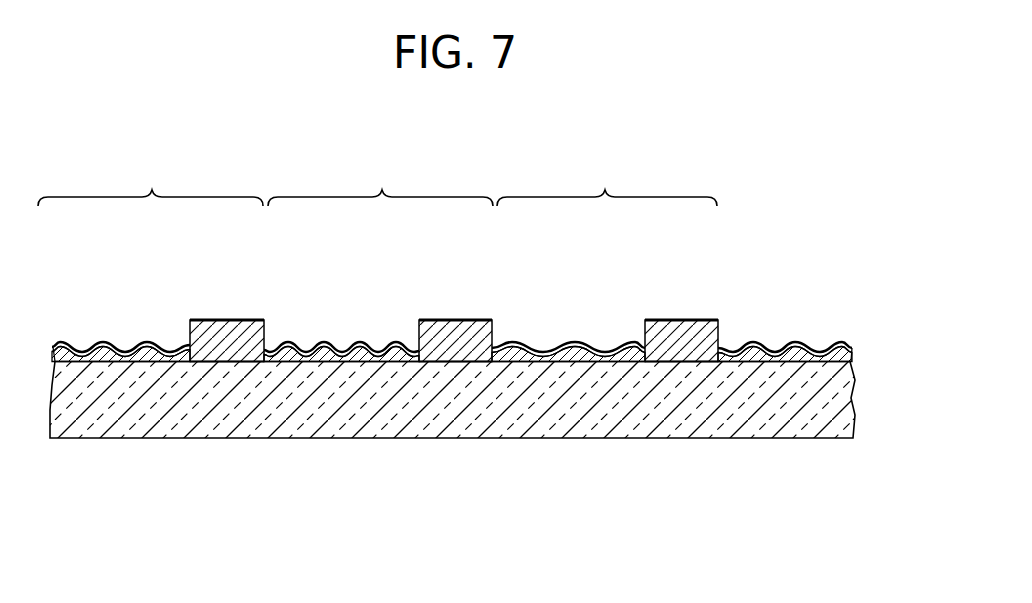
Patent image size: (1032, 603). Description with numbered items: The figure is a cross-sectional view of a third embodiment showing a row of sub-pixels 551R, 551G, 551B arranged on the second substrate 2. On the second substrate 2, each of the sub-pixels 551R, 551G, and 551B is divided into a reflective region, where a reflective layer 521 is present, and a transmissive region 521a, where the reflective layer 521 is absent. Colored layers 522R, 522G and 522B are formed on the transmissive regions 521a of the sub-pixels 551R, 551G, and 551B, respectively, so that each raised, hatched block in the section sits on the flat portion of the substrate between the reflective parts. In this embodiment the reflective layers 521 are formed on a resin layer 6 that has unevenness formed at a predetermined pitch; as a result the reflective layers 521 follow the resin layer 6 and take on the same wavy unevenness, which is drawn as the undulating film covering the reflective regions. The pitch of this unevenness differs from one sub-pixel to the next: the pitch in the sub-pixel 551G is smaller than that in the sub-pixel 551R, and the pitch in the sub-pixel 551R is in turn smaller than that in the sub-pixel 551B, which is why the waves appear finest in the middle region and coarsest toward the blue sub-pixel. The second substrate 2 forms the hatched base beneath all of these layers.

The second substrate 2 is at (840, 412).
The resin layer 6 is at (851, 352).
The reflective layer 521 is at (103, 344).
The transmissive region 521a is at (215, 362).
The colored layer 522R is at (227, 320).
The colored layer 522G is at (457, 320).
The colored layer 522B is at (681, 320).
The sub-pixel 551R is at (150, 181).
The sub-pixel 551G is at (380, 181).
The sub-pixel 551B is at (607, 181).